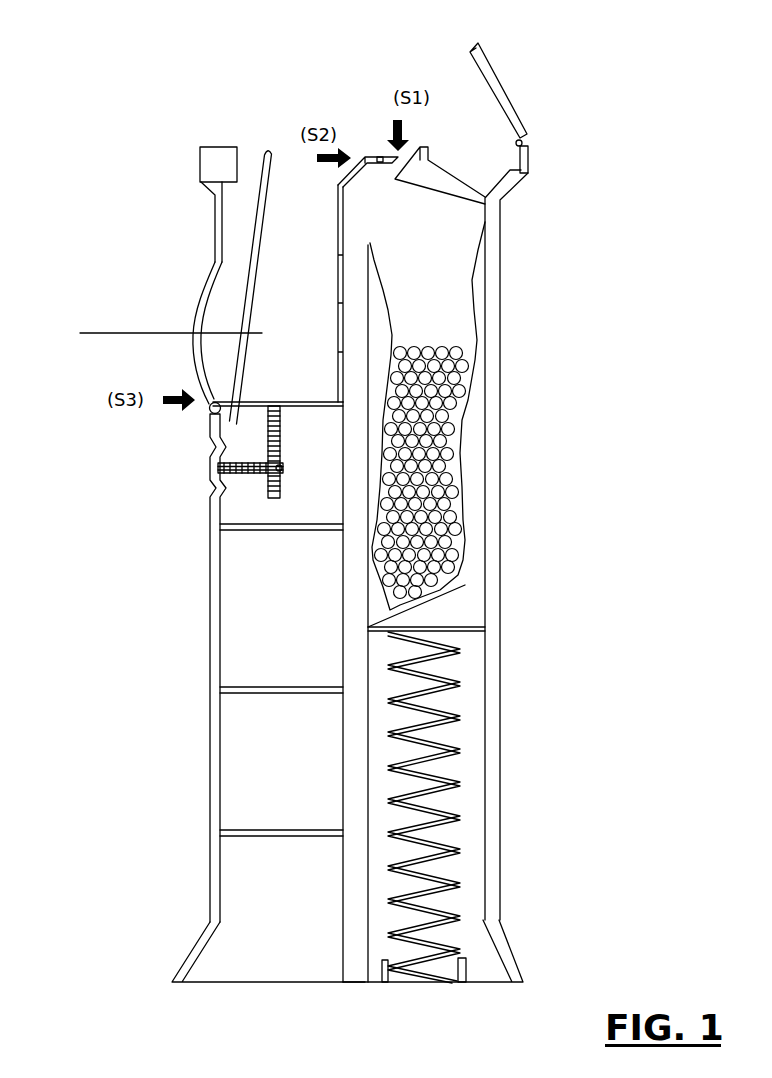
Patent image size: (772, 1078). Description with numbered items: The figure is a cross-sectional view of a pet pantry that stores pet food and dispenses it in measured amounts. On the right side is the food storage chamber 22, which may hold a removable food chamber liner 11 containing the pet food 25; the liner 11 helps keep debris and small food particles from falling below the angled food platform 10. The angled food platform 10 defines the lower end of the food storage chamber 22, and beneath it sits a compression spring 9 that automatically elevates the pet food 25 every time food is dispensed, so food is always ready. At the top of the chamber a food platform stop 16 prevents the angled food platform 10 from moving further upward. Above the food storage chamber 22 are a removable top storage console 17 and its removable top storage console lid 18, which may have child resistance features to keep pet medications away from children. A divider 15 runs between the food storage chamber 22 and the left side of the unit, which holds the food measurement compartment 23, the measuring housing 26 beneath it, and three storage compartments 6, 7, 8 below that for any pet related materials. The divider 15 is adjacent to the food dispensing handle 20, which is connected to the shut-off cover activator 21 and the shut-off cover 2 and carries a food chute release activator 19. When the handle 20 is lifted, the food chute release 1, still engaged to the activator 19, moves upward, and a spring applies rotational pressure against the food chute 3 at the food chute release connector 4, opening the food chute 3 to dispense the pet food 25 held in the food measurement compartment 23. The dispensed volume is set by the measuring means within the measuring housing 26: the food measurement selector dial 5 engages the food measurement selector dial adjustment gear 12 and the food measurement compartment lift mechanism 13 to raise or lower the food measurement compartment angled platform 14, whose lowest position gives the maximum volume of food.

The food chute release 1 is at (268, 152).
The shut-off cover 2 is at (338, 323).
The food chute 3 is at (194, 322).
The food chute release connector 4 is at (213, 420).
The food measurement selector dial 5 is at (217, 472).
The storage compartment 6 is at (243, 610).
The storage compartment 7 is at (240, 770).
The storage compartment 8 is at (255, 908).
The compression spring 9 is at (443, 714).
The angled food platform 10 is at (467, 608).
The removable food chamber liner 11 is at (462, 532).
The food measurement selector dial adjustment gear 12 is at (283, 470).
The food measurement compartment lift mechanism 13 is at (281, 433).
The food measurement compartment angled platform 14 is at (320, 380).
The divider 15 is at (357, 868).
The food platform stop 16 is at (345, 258).
The removable top storage console 17 is at (508, 167).
The removable top storage console lid 18 is at (507, 95).
The food chute release activator 19 is at (380, 157).
The food dispensing handle 20 is at (363, 155).
The shut-off cover activator 21 is at (340, 230).
The food storage chamber 22 is at (468, 445).
The food measurement compartment 23 is at (152, 333).
The pet food 25 is at (477, 575).
The measuring housing 26 is at (247, 508).